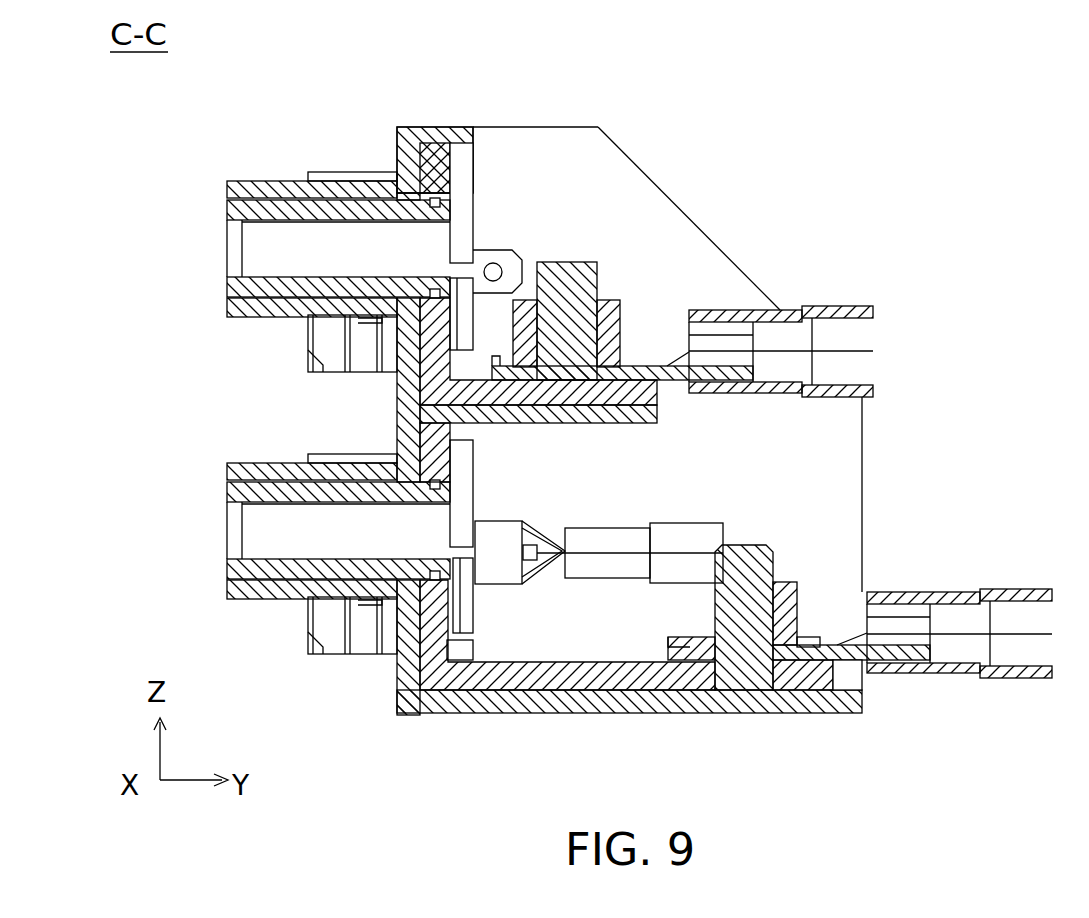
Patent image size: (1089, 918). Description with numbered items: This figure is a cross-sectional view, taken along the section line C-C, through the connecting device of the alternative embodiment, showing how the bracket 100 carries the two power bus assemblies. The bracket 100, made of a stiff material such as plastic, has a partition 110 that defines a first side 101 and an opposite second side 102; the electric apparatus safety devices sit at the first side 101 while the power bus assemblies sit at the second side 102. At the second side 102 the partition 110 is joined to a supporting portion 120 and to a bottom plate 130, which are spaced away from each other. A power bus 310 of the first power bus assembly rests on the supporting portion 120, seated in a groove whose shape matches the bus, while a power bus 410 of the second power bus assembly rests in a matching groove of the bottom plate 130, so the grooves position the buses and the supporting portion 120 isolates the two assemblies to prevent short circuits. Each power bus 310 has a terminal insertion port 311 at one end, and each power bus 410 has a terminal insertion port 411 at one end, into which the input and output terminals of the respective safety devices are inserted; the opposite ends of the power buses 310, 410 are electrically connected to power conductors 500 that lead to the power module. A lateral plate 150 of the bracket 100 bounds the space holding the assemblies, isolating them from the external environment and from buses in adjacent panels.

The bracket 100 is at (440, 127).
The first side 101 is at (380, 149).
The second side 102 is at (512, 166).
The partition 110 is at (393, 385).
The supporting portion 120 is at (655, 413).
The bottom plate 130 is at (743, 702).
The lateral plate 150 is at (688, 232).
The power bus 310 is at (637, 395).
The terminal insertion port 311 is at (270, 250).
The power bus 410 is at (582, 674).
The terminal insertion port 411 is at (270, 530).
The power conductor 500 is at (841, 335).